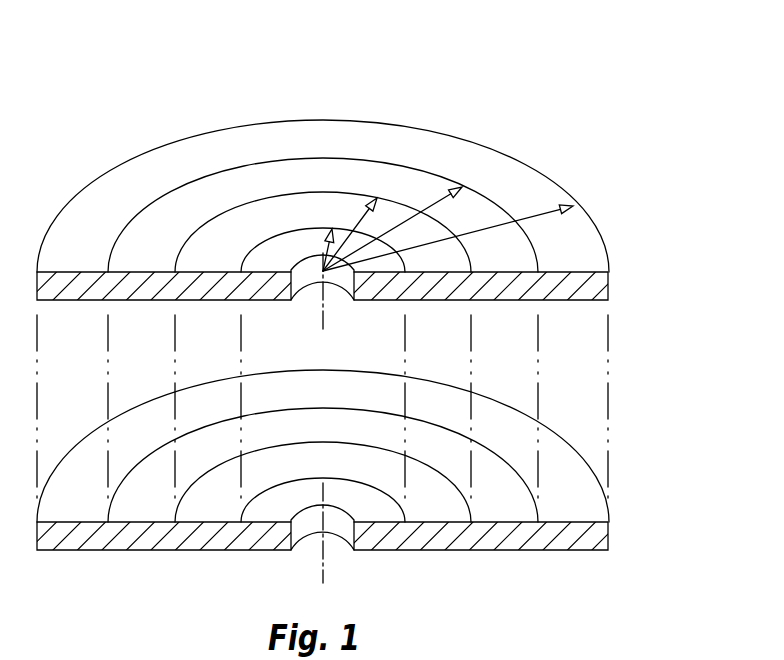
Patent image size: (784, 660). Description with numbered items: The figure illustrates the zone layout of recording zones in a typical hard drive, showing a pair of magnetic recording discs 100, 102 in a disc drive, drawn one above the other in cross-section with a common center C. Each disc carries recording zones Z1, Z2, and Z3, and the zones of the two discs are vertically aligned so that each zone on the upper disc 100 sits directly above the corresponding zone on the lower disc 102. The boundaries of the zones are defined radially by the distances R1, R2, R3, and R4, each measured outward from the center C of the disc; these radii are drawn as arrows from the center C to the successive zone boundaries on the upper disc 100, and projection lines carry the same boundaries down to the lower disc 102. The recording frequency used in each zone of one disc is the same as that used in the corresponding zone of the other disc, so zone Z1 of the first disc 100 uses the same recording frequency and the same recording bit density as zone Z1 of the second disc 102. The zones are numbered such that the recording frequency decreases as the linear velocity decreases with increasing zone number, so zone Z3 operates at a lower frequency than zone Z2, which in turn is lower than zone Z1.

The disc 100 is at (571, 166).
The disc 102 is at (639, 426).
The radial distance R1 is at (325, 250).
The radial distance R2 is at (352, 232).
The radial distance R3 is at (427, 207).
The radial distance R4 is at (520, 219).
The recording zone Z1 is at (76, 374).
The recording zone Z2 is at (147, 374).
The recording zone Z3 is at (217, 374).
The center C is at (323, 308).